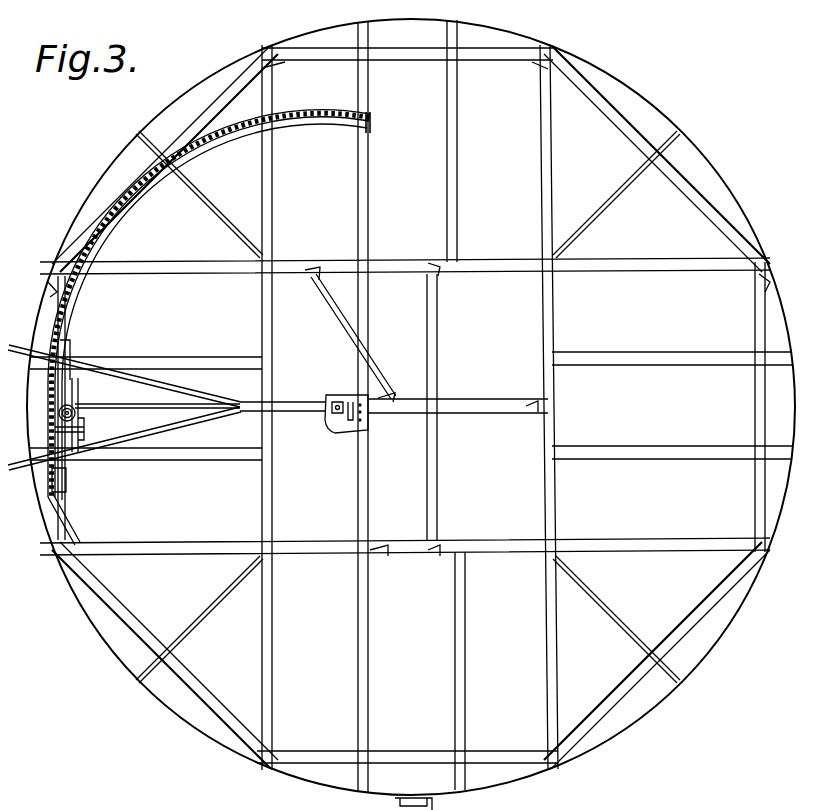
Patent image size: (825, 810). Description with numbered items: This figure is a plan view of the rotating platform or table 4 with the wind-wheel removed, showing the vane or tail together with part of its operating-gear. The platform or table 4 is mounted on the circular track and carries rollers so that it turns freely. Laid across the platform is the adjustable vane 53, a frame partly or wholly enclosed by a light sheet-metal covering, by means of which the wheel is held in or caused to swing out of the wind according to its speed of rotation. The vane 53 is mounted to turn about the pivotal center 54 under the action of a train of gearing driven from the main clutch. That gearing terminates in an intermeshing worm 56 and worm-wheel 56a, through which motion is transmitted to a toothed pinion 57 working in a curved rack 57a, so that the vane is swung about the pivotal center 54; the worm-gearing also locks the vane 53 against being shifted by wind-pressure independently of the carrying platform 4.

The platform or table 4 is at (637, 101).
The curved rack 57a is at (97, 243).
The worm-wheel 56a is at (69, 404).
The adjustable vane 53 is at (153, 375).
The pivotal center 54 is at (328, 398).
The worm 56 is at (67, 447).
The toothed pinion 57 is at (70, 475).